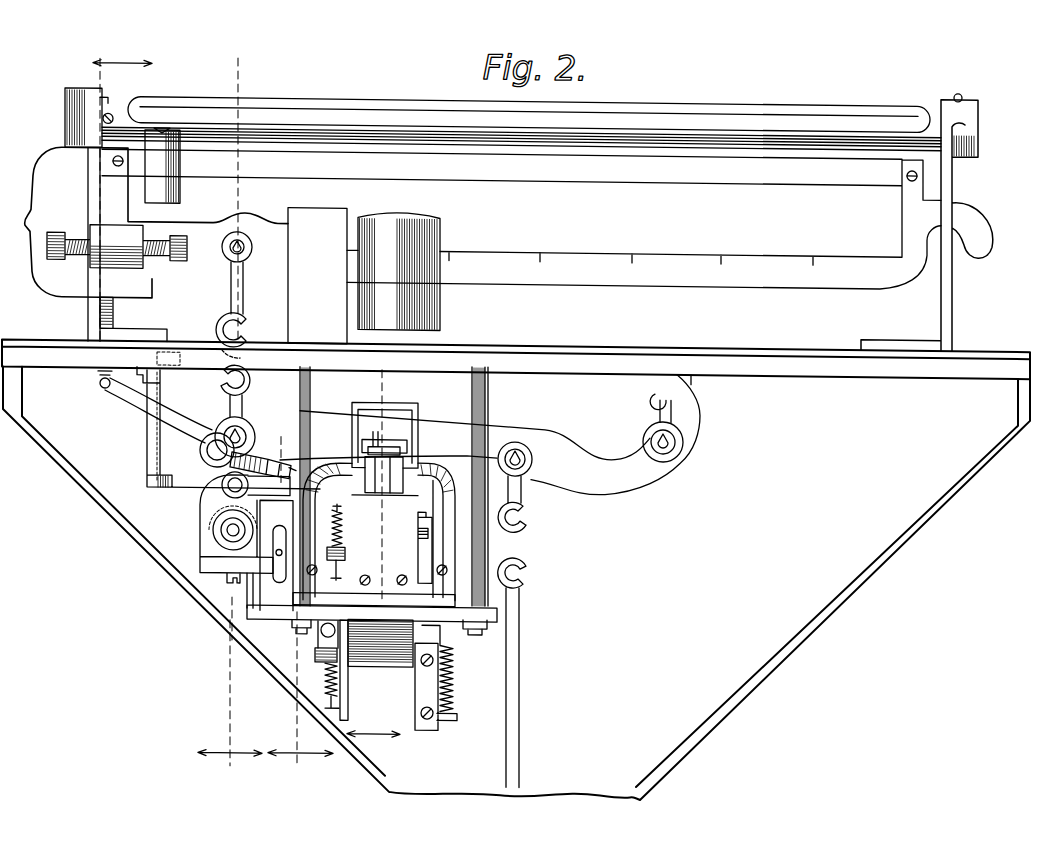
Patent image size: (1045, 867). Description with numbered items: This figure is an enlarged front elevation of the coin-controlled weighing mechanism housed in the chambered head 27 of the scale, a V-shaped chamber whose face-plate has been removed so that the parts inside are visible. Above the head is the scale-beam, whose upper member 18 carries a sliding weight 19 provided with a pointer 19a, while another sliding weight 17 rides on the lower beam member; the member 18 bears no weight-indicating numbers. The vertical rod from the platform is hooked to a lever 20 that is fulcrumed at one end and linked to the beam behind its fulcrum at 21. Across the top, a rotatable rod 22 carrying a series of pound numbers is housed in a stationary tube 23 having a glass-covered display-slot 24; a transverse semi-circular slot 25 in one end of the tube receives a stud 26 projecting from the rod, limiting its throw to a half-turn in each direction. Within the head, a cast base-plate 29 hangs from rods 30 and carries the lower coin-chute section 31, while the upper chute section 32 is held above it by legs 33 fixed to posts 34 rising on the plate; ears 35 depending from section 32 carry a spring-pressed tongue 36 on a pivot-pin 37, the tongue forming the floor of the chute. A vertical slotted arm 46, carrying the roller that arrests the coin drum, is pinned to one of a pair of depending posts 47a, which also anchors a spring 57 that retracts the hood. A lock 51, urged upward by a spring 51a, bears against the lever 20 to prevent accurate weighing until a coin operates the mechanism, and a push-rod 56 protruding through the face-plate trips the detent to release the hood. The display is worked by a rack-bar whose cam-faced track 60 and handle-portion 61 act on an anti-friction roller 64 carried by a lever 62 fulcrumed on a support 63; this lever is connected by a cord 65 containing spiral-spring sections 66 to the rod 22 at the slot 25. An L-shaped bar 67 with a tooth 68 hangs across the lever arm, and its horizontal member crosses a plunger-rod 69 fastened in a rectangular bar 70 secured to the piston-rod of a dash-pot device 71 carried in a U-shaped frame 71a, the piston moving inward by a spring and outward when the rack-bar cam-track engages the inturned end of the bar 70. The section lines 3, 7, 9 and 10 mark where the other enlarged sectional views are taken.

The section line 3 is at (373, 747).
The section line 7 is at (300, 770).
The section line 9 is at (230, 769).
The section line 10 is at (122, 52).
The sliding weight 17 is at (432, 241).
The upper member 18 is at (719, 176).
The sliding weight 19 is at (176, 170).
The pointer 19a is at (164, 125).
The lever 20 is at (324, 416).
The fulcrum 21 is at (317, 276).
The rod 22 is at (746, 107).
The stationary tube 23 is at (850, 95).
The display-slot 24 is at (678, 124).
The transverse semi-circular slot 25 is at (102, 98).
The stud 26 is at (113, 112).
The chambered head 27 is at (516, 585).
The base-plate 29 is at (262, 610).
The rods 30 is at (308, 382).
The lower section of coin-chute 31 is at (393, 663).
The upper section of coin-chute 32 is at (397, 401).
The legs 33 is at (443, 468).
The posts 34 is at (437, 586).
The ears 35 is at (368, 461).
The spring-pressed tongue 36 is at (398, 435).
The pivot-pin 37 is at (382, 432).
The vertical slotted arm 46 is at (431, 726).
The post 47a is at (346, 688).
The lock 51 is at (348, 522).
The spring 51a is at (345, 547).
The push-rod 56 is at (322, 630).
The spring 57 is at (326, 678).
The cam-faced track 60 is at (246, 424).
The handle-portion 61 is at (213, 559).
The lever 62 is at (180, 413).
The support 63 is at (213, 399).
The anti-friction roller 64 is at (291, 463).
The resilient flexible medium 65 is at (67, 96).
The spiral-spring sections 66 is at (115, 318).
The L-shaped bar 67 is at (147, 470).
The tooth or shoulder 68 is at (148, 416).
The plunger-rod 69 is at (222, 486).
The rectangular bar 70 is at (269, 486).
The dash-pot device 71 is at (213, 530).
The U-shaped frame 71a is at (232, 471).